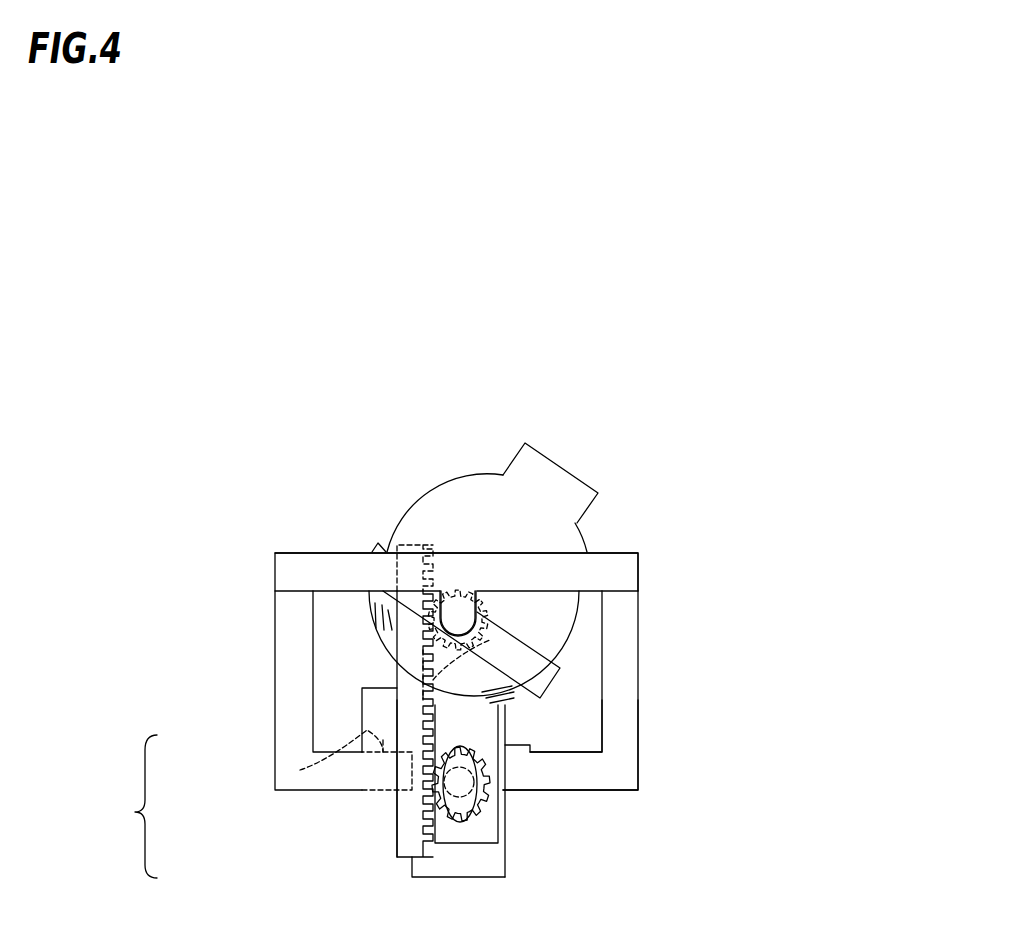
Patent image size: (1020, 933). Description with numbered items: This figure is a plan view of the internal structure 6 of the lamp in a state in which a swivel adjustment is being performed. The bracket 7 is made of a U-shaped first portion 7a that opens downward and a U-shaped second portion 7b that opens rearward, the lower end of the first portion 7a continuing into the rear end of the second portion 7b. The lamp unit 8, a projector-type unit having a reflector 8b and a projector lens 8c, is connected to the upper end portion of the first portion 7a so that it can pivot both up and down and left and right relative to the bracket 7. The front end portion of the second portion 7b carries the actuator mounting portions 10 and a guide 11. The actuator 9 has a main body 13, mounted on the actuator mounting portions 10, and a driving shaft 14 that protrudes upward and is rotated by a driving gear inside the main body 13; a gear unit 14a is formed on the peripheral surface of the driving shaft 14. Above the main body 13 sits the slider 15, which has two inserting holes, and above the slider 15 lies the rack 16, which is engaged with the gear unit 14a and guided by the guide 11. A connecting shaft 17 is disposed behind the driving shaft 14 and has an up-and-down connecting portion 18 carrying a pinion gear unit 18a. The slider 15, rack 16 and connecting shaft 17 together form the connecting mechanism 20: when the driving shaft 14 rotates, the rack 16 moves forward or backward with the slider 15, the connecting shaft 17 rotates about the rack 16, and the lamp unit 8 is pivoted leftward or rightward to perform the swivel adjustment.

The drive unit 6 is at (205, 497).
The bracket 7 is at (640, 563).
The first portion 7a is at (640, 585).
The second portion 7b is at (590, 785).
The lamp unit 8 is at (450, 498).
The reflector 8b is at (483, 475).
The projector lens 8c is at (372, 607).
The actuator 9 is at (503, 867).
The actuator mounting portions 10 is at (300, 770).
The guide 11 is at (362, 688).
The main body 13 is at (503, 852).
The driving shaft 14 is at (450, 805).
The gear unit 14a is at (452, 810).
The slider 15 is at (453, 737).
The rack 16 is at (405, 825).
The connecting shaft 17 is at (423, 693).
The connecting portion 18 is at (470, 612).
The pinion gear unit 18a is at (487, 617).
The connecting mechanism 20 is at (131, 806).